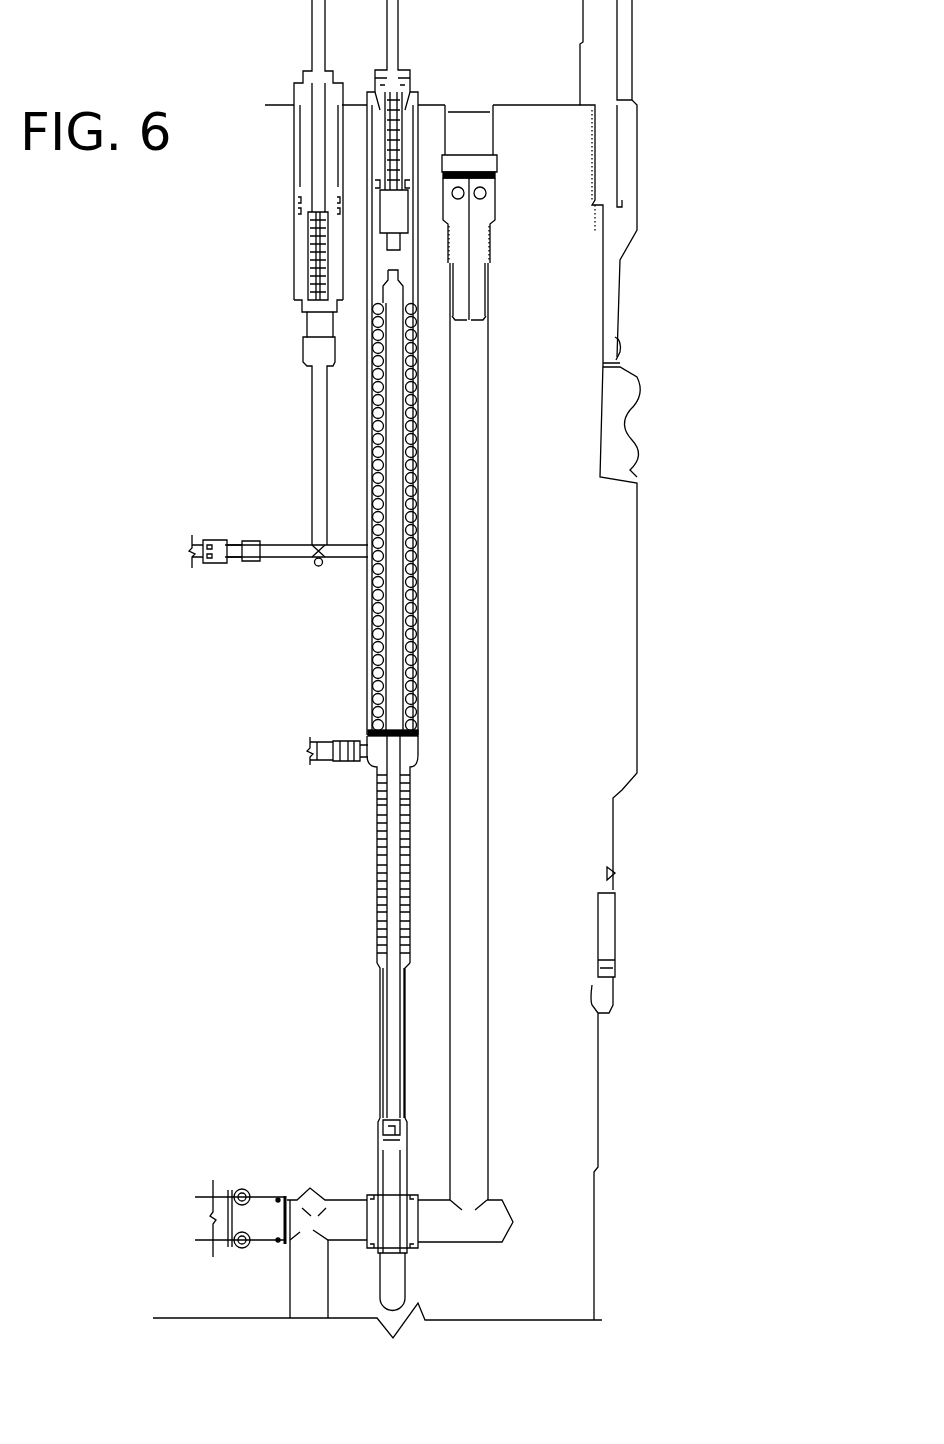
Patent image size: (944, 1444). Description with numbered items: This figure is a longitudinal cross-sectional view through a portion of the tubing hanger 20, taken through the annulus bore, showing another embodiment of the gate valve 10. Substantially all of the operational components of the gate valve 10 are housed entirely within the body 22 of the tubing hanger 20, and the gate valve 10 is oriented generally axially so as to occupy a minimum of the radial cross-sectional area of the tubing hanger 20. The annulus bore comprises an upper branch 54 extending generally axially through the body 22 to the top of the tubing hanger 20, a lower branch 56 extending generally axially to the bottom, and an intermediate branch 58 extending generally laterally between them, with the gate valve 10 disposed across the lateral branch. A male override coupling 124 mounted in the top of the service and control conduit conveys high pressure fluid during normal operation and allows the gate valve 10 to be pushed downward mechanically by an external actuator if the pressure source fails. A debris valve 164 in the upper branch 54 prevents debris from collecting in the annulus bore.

The gate valve 10 is at (513, 1244).
The tubing hanger 20 is at (638, 701).
The body 22 is at (317, 472).
The upper branch 54 is at (483, 855).
The lower branch 56 is at (290, 1308).
The intermediate branch 58 is at (343, 1200).
The male override coupling 124 is at (420, 81).
The debris valve 164 is at (502, 213).